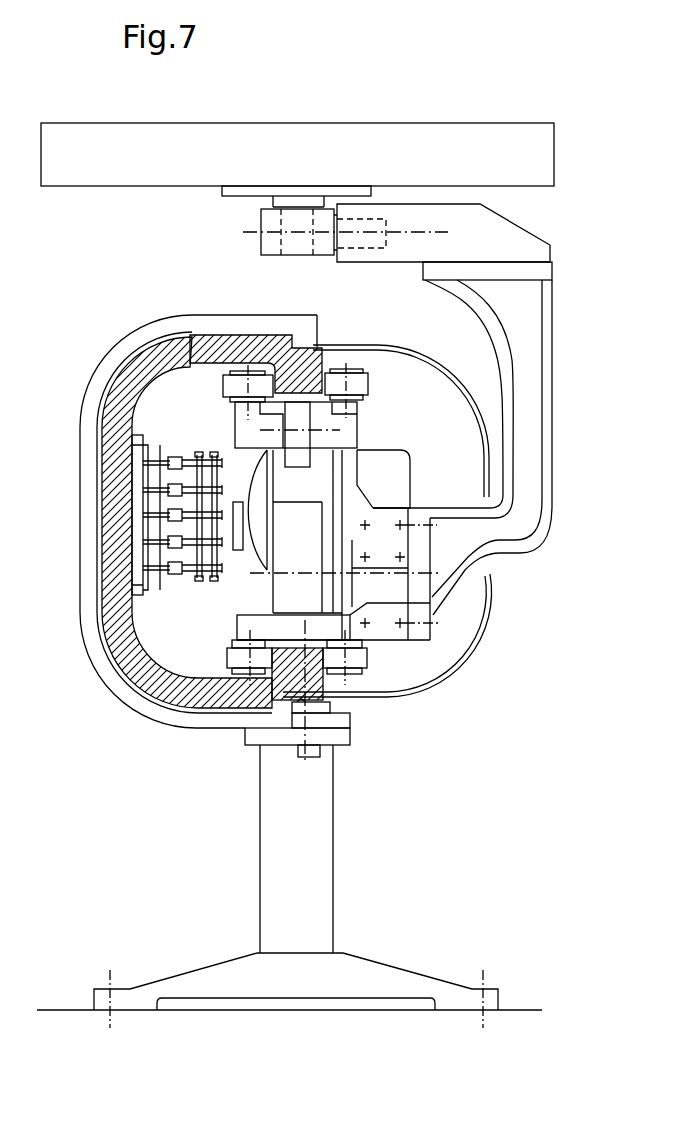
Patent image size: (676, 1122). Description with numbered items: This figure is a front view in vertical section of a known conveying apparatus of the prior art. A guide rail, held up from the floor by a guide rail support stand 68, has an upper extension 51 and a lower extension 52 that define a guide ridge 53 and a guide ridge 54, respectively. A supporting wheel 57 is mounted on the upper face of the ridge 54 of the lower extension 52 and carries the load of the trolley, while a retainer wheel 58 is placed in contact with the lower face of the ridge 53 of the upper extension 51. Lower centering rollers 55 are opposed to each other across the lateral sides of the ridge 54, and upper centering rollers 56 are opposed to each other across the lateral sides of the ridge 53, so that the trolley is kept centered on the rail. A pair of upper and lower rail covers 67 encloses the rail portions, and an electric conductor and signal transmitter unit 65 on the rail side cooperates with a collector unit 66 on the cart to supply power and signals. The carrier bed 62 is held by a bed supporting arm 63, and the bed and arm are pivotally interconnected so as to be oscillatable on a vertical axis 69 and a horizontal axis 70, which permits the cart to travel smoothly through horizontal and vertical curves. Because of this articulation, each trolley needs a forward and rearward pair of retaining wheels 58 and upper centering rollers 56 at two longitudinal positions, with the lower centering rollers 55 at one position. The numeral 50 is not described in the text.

The outer shell / clamp housing 50 is at (123, 692).
The upper extension 51 is at (232, 340).
The lower extension 52 is at (219, 709).
The guide ridge 53 is at (331, 350).
The guide ridge 54 is at (269, 707).
The lower centering rollers 55 is at (188, 729).
The upper centering rollers 56 is at (228, 385).
The supporting wheel 57 is at (310, 518).
The retainer wheel 58 is at (355, 415).
The carrier bed 62 is at (430, 142).
The bed supporting arm 63 is at (532, 501).
The electric conductor and signal transmitter unit 65 is at (135, 551).
The collector unit 66 is at (204, 592).
The upper and lower rail covers 67 is at (487, 438).
The guide rail support stand 68 is at (325, 896).
The vertical axis 69 is at (299, 268).
The horizontal axis 70 is at (432, 229).